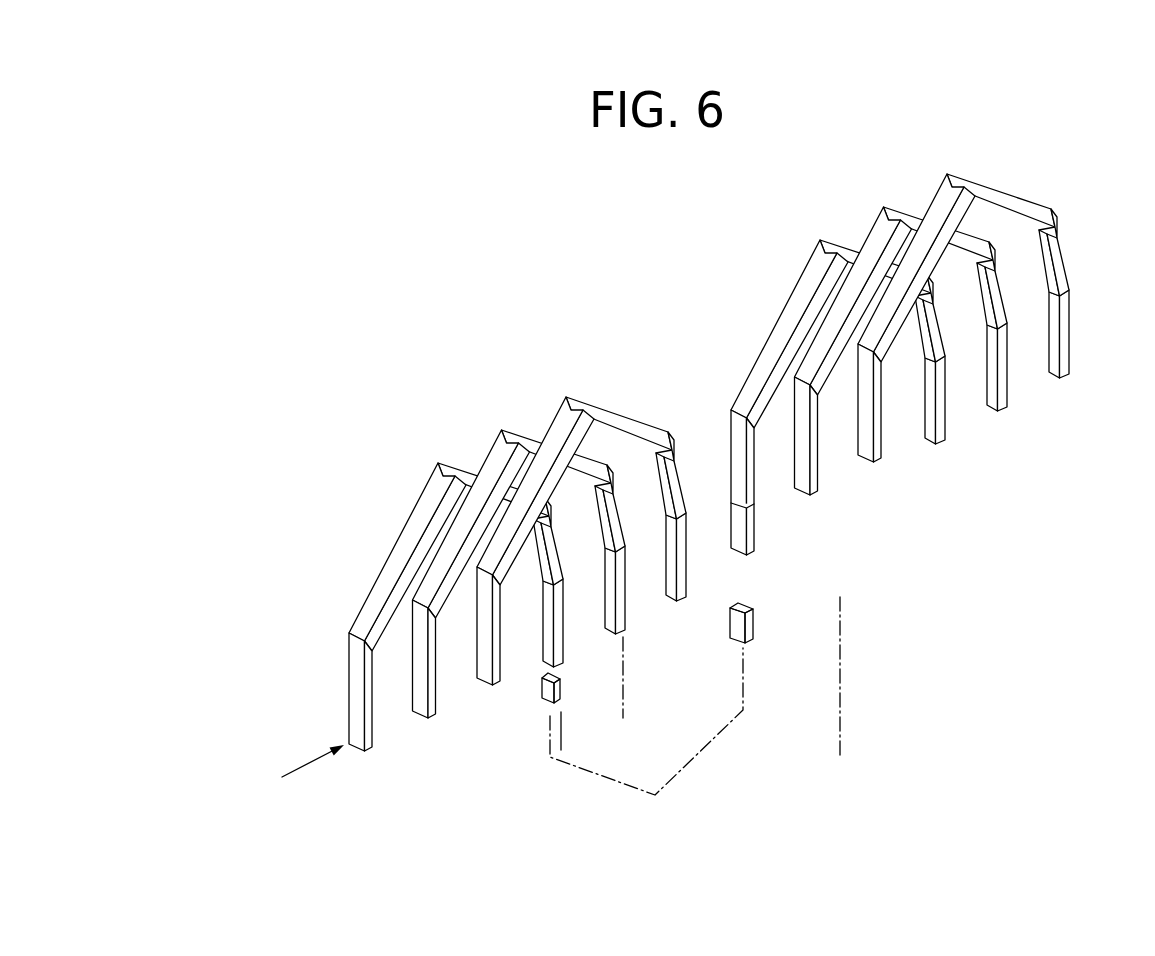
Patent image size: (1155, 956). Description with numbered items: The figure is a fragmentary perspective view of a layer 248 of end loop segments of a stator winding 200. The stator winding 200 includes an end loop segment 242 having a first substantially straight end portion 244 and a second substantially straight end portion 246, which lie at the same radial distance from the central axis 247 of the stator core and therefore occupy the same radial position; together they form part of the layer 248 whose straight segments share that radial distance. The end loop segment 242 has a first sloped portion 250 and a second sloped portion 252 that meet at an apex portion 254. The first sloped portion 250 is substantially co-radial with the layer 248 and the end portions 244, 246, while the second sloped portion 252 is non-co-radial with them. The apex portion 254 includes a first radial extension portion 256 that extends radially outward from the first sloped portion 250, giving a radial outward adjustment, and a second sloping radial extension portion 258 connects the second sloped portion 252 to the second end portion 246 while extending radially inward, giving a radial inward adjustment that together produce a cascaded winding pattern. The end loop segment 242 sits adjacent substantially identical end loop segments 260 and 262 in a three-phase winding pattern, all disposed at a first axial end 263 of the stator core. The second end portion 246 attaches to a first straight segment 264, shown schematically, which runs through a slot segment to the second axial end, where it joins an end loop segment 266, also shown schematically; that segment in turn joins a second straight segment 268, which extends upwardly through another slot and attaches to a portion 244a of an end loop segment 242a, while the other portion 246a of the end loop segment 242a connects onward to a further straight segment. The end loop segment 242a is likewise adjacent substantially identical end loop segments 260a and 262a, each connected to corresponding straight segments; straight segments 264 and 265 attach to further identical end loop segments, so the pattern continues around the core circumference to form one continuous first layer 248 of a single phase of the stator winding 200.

The stator winding 200 is at (659, 472).
The end loop segment 242 is at (471, 569).
The first substantially straight end portion 244 is at (372, 742).
The second substantially straight end portion 246 is at (543, 608).
The central axis 247 is at (842, 663).
The layer 248 is at (307, 762).
The first sloped portion 250 is at (366, 557).
The second sloped portion 252 is at (527, 470).
The apex portion 254 is at (387, 552).
The first radial extension portion 256 is at (457, 480).
The second sloping radial extension portion 258 is at (553, 557).
The end loop segment 260 is at (559, 546).
The end loop segment 262 is at (581, 512).
The first axial end 263 is at (618, 699).
The first straight segment 264 is at (496, 702).
The straight segment 265 is at (655, 606).
The end loop segment 266 is at (688, 723).
The second straight segment 268 is at (806, 590).
The end loop segment 242a is at (859, 397).
The portion of end loop segment 242a 244a is at (750, 488).
The portion of end loop segment 242a 246a is at (946, 440).
The end loop segment 260a is at (889, 321).
The end loop segment 262a is at (999, 304).